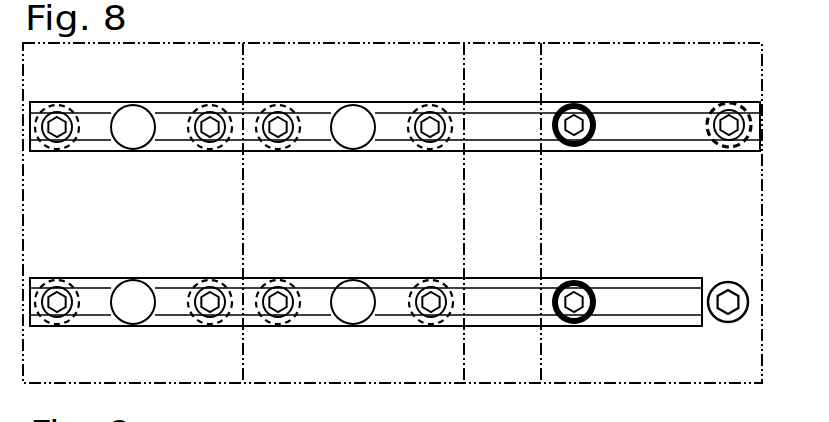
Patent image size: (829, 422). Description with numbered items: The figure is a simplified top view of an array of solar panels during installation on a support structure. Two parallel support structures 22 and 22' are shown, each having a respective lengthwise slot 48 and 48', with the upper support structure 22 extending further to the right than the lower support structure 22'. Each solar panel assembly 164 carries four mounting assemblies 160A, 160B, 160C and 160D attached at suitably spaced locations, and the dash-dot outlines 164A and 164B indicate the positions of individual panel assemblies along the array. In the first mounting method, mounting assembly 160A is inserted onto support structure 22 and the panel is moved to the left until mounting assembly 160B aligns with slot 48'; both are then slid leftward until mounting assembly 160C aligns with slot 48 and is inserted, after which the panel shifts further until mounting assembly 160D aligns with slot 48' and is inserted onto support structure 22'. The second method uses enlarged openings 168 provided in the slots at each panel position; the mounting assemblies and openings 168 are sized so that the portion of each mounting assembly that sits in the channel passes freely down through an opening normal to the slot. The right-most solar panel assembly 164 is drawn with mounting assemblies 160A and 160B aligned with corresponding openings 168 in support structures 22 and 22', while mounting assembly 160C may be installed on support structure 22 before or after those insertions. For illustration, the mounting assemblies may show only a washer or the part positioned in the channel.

The support structure 22 is at (395, 107).
The support structure 22' is at (366, 323).
The lengthwise slot 48 is at (503, 153).
The lengthwise slot 48' is at (644, 327).
The mounting assembly 160A is at (597, 125).
The mounting assembly 160B is at (597, 302).
The mounting assembly 160C is at (707, 125).
The mounting assembly 160D is at (728, 323).
The solar panel assembly 164 is at (612, 388).
The first connection zone 164A is at (540, 265).
The second connection zone 164B is at (764, 70).
The enlarged opening 168 is at (562, 143).